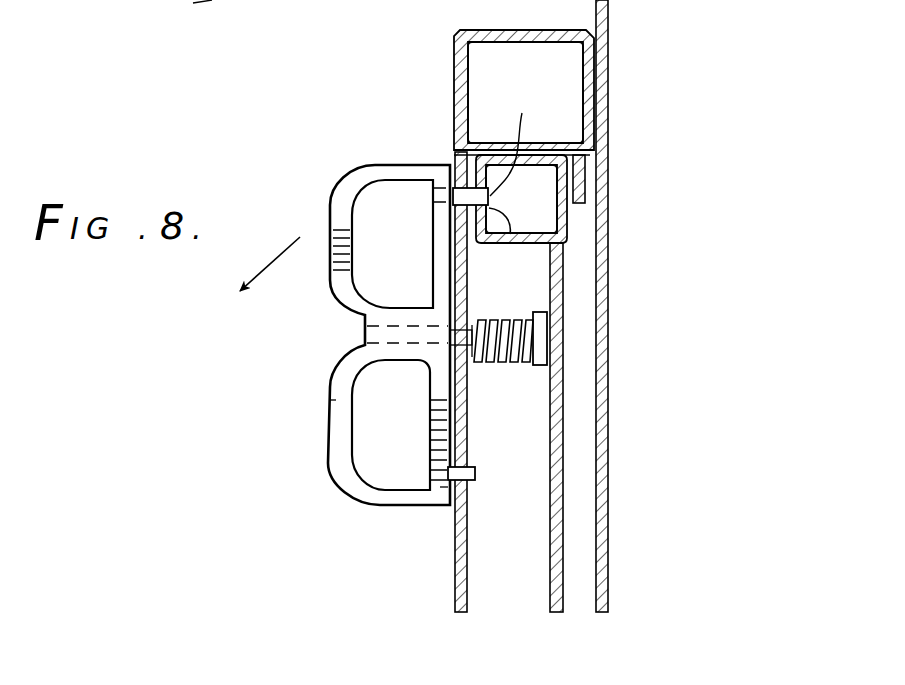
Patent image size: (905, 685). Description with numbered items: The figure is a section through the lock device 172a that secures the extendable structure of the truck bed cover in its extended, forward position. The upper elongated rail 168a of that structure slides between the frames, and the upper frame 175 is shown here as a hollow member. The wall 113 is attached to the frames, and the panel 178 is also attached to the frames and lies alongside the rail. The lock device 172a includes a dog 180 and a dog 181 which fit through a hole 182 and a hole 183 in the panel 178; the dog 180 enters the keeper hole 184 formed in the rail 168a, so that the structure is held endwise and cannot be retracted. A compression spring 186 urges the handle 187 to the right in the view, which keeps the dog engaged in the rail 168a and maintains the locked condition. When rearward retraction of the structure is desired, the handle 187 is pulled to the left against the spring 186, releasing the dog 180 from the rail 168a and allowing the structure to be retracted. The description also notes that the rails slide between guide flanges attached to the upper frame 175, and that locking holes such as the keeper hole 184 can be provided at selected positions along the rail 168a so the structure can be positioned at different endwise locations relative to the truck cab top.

The wall 113 is at (610, 107).
The upper frame 175 is at (454, 78).
The dog 180 is at (520, 139).
The hole 182 is at (460, 180).
The compression spring 186 is at (578, 185).
The upper rail 168a is at (572, 219).
The keeper hole 184 is at (505, 238).
The lock device 172a is at (338, 336).
The handle 187 is at (330, 400).
The hole 183 is at (440, 487).
The dog 181 is at (475, 478).
The panel 178 is at (455, 575).